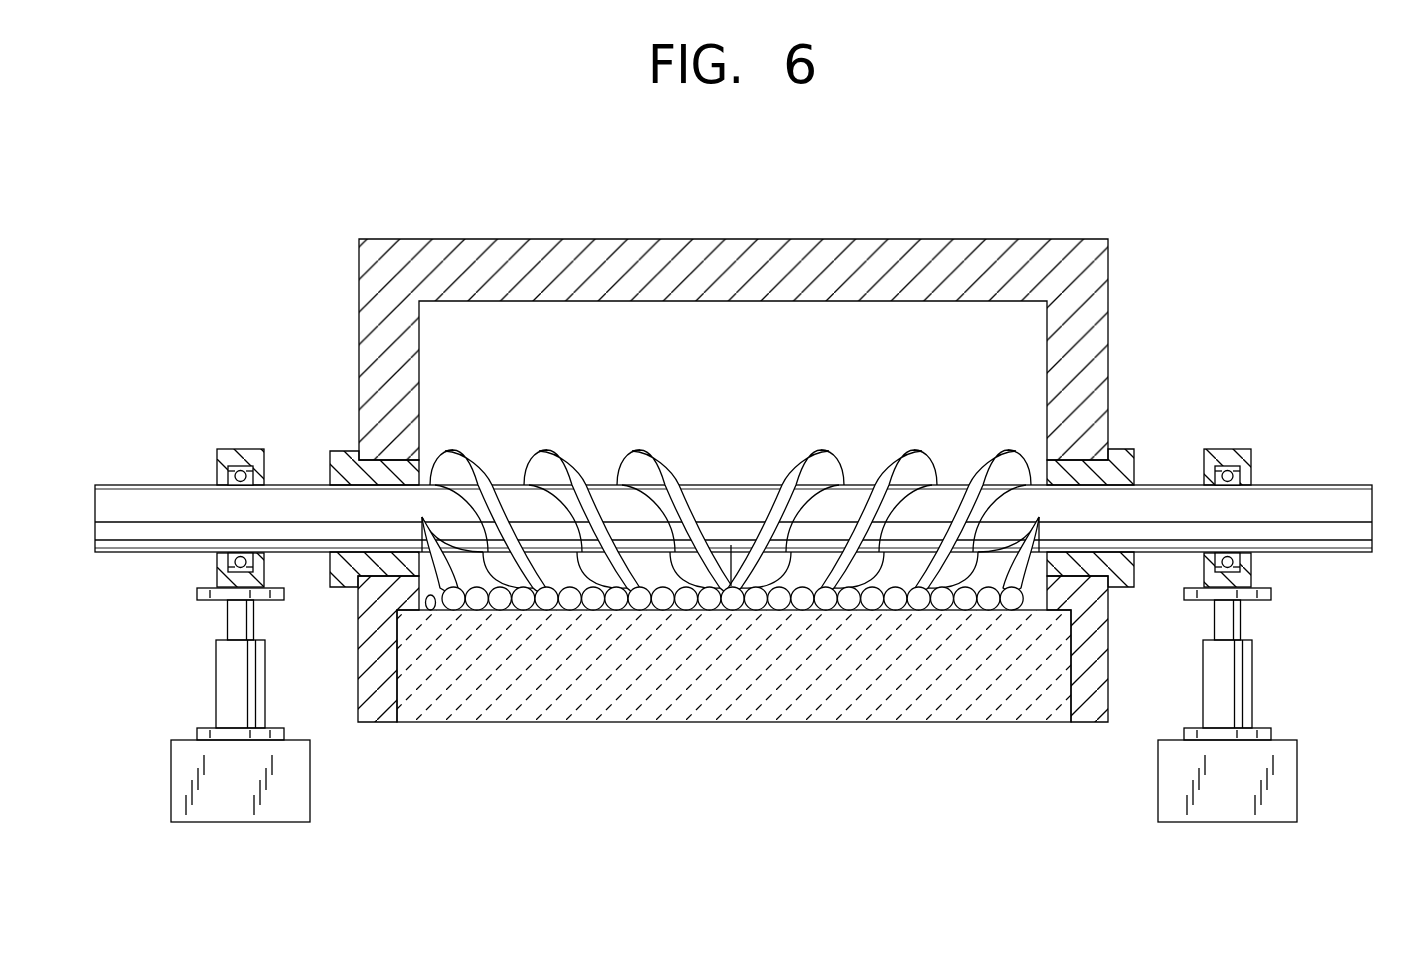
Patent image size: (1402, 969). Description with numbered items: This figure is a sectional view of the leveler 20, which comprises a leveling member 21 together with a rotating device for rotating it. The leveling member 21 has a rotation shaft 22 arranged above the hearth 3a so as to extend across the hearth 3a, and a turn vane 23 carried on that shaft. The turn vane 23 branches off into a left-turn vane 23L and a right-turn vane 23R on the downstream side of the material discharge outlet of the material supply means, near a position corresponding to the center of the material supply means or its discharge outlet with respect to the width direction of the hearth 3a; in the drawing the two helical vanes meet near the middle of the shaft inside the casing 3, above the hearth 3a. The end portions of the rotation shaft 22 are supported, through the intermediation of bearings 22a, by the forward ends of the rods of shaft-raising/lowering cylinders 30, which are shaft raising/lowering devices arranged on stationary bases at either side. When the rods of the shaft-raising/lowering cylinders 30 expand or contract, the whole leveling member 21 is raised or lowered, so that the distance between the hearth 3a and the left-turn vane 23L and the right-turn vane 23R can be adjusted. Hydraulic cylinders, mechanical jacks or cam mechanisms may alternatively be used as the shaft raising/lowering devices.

The casing 3 is at (470, 226).
The hearth 3a is at (433, 610).
The leveler 20 is at (741, 451).
The leveling member 21 is at (1346, 472).
The rotation shaft 22 is at (730, 451).
The bearings 22a is at (218, 468).
The turn vane 23 is at (730, 451).
The right-turn vane 23R is at (640, 452).
The left-turn vane 23L is at (822, 452).
The shaft-raising/lowering cylinders 30 is at (215, 665).